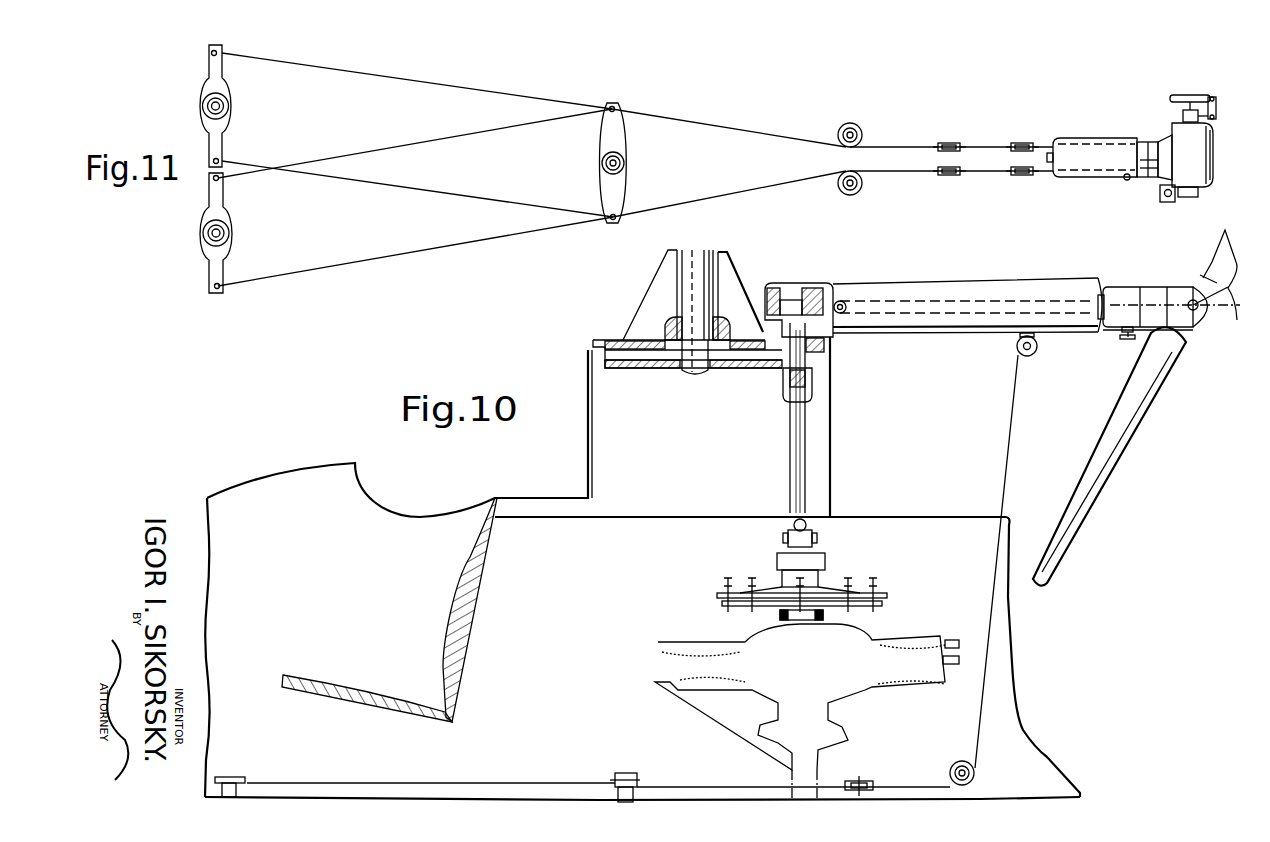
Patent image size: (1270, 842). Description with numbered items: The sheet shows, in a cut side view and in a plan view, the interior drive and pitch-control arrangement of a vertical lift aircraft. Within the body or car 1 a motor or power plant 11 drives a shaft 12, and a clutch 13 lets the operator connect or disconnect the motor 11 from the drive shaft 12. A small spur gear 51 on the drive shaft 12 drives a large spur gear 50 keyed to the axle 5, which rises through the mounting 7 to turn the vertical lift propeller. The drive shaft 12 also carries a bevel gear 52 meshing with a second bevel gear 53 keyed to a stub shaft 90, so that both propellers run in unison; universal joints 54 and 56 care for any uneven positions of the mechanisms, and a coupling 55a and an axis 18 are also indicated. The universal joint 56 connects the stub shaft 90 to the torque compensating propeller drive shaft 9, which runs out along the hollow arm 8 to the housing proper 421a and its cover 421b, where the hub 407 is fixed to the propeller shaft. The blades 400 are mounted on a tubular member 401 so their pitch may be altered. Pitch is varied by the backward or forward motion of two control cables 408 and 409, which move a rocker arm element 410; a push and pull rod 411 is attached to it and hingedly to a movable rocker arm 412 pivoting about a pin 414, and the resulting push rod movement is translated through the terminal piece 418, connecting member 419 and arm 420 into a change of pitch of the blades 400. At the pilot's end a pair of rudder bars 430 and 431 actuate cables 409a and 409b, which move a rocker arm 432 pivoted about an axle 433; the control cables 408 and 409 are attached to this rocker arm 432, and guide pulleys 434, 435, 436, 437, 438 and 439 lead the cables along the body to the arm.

In FIG. 10, the body or car 1 is at (325, 470).
In FIG. 10, the axle 5 is at (690, 267).
In FIG. 10, the mounting 7 is at (652, 283).
In FIG. 11, the arm 8 is at (1083, 140).
In FIG. 10, the arm 8 is at (995, 283).
In FIG. 11, the torque compensating propeller drive shaft 9 is at (1053, 142).
In FIG. 10, the torque compensating propeller drive shaft 9 is at (893, 285).
In FIG. 10, the motor or power plant 11 is at (832, 642).
In FIG. 10, the drive shaft 12 is at (798, 360).
In FIG. 10, the clutch 13 is at (818, 580).
In FIG. 10, the axis 18 is at (1124, 305).
In FIG. 10, the spur gear 50 is at (618, 340).
In FIG. 10, the spur gear 51 is at (808, 348).
In FIG. 10, the bevel gear 52 is at (780, 307).
In FIG. 10, the bevel gear 53 is at (795, 290).
In FIG. 10, the universal joint 54 is at (806, 523).
In FIG. 10, the coupling 55a is at (813, 388).
In FIG. 10, the universal joint 56 is at (843, 303).
In FIG. 10, the stub shaft 90 is at (828, 308).
In FIG. 11, the blades 400 is at (1183, 116).
In FIG. 10, the blades 400 is at (1218, 260).
In FIG. 10, the tubular member 401 is at (1200, 275).
In FIG. 11, the torque compensating propeller hub 407 is at (1187, 112).
In FIG. 11, the control cable 408 is at (755, 189).
In FIG. 10, the control cable 408 is at (1018, 428).
In FIG. 11, the control cable 409 is at (767, 134).
In FIG. 11, the cable 409a is at (477, 92).
In FIG. 11, the cable 409b is at (463, 133).
In FIG. 10, the cable 409b is at (388, 783).
In FIG. 11, the rocker arm element 410 is at (1123, 179).
In FIG. 11, the push and pull rod 411 is at (1137, 178).
In FIG. 11, the movable rocker arm 412 is at (1190, 198).
In FIG. 11, the pin 414 is at (1167, 203).
In FIG. 11, the terminal piece 418 is at (1188, 97).
In FIG. 11, the connecting member 419 is at (1230, 87).
In FIG. 10, the arm 420 is at (1221, 311).
In FIG. 10, the housing proper 421a is at (1186, 286).
In FIG. 10, the housing cover 421b is at (1202, 327).
In FIG. 11, the rudder bar 430 is at (219, 130).
In FIG. 11, the rudder bar 431 is at (219, 208).
In FIG. 10, the rudder bar 431 is at (237, 776).
In FIG. 11, the rocker arm 432 is at (618, 138).
In FIG. 10, the rocker arm 432 is at (638, 780).
In FIG. 11, the axle 433 is at (619, 172).
In FIG. 11, the guide pulley 434 is at (858, 193).
In FIG. 10, the guide pulley 434 is at (867, 783).
In FIG. 11, the guide pulley 435 is at (859, 127).
In FIG. 11, the guide pulley 436 is at (945, 143).
In FIG. 11, the guide pulley 437 is at (947, 175).
In FIG. 10, the guide pulley 437 is at (958, 762).
In FIG. 11, the guide pulley 438 is at (1021, 141).
In FIG. 11, the guide pulley 439 is at (1021, 177).
In FIG. 10, the guide pulley 439 is at (1035, 356).